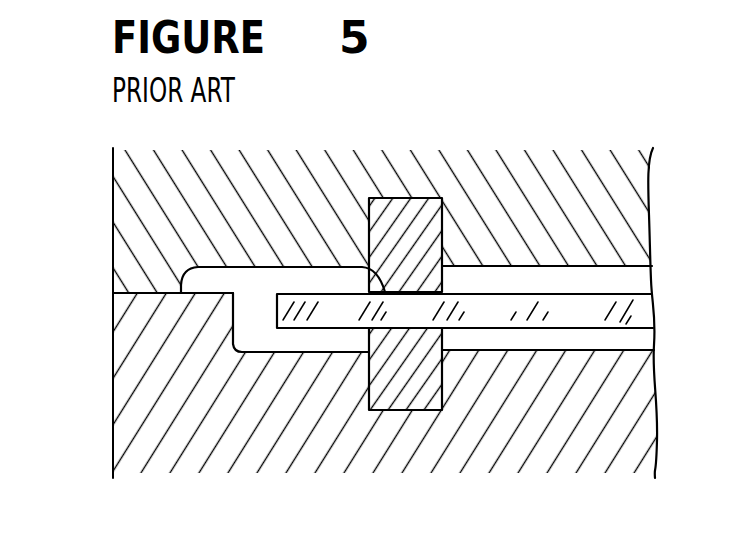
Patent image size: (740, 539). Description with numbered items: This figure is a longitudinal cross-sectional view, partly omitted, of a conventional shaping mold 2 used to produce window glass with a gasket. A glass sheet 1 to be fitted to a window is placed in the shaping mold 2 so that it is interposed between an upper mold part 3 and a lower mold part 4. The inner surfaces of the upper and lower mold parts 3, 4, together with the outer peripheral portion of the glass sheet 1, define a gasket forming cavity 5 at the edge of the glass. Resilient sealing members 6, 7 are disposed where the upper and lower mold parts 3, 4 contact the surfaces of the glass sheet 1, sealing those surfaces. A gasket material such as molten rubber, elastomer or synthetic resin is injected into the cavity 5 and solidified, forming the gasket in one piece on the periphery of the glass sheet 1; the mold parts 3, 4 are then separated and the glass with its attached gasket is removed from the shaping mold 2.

The glass sheet 1 is at (600, 308).
The shaping mold 2 is at (57, 215).
The upper mold part 3 is at (142, 242).
The lower mold part 4 is at (140, 344).
The gasket forming cavity 5 is at (260, 338).
The resilient sealing member 6 is at (403, 222).
The resilient sealing member 7 is at (404, 390).